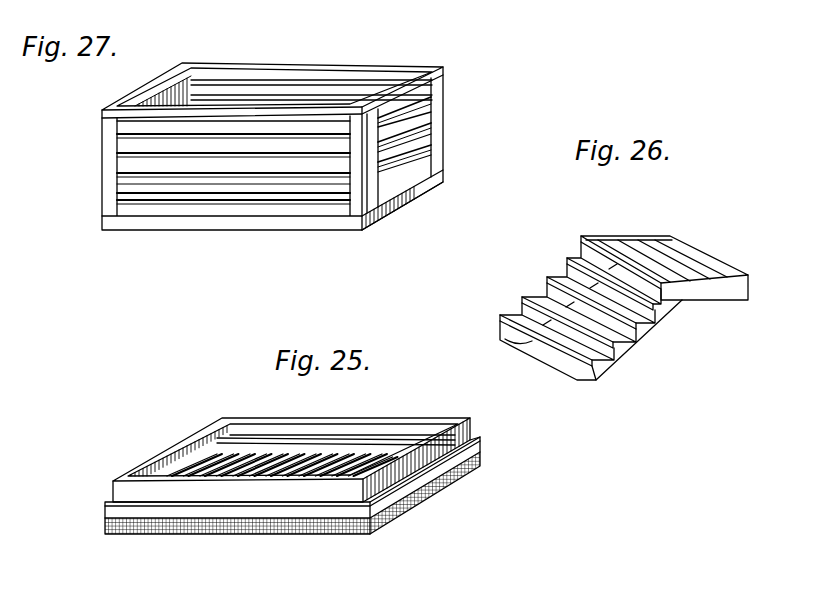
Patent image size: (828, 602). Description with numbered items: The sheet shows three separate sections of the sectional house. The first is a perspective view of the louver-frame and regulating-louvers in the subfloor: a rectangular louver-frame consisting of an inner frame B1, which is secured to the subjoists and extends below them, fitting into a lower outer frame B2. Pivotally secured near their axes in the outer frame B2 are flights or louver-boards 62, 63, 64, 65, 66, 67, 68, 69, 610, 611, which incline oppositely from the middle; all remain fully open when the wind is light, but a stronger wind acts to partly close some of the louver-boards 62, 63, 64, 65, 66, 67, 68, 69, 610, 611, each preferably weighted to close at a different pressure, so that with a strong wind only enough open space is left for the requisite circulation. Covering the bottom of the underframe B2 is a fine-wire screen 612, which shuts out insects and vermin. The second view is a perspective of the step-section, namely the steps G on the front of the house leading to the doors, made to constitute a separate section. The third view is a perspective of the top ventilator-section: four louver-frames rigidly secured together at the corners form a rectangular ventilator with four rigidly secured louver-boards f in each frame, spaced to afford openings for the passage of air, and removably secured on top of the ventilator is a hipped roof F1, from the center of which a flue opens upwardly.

In FIG. 27, the roof F1 is at (420, 68).
In FIG. 27, the louver-board f is at (117, 162).
In FIG. 26, the steps G is at (684, 298).
In FIG. 25, the inner frame B1 is at (417, 418).
In FIG. 25, the outer frame B2 is at (500, 427).
In FIG. 25, the louver-board 62 is at (193, 480).
In FIG. 25, the louver-board 63 is at (212, 480).
In FIG. 25, the louver-board 64 is at (227, 480).
In FIG. 25, the louver-board 65 is at (243, 480).
In FIG. 25, the louver-board 66 is at (260, 480).
In FIG. 25, the louver-board 67 is at (372, 458).
In FIG. 25, the louver-board 68 is at (348, 475).
In FIG. 25, the louver-board 69 is at (365, 456).
In FIG. 25, the louver-board 610 is at (343, 457).
In FIG. 25, the louver-board 611 is at (320, 463).
In FIG. 25, the wire screen 612 is at (363, 478).